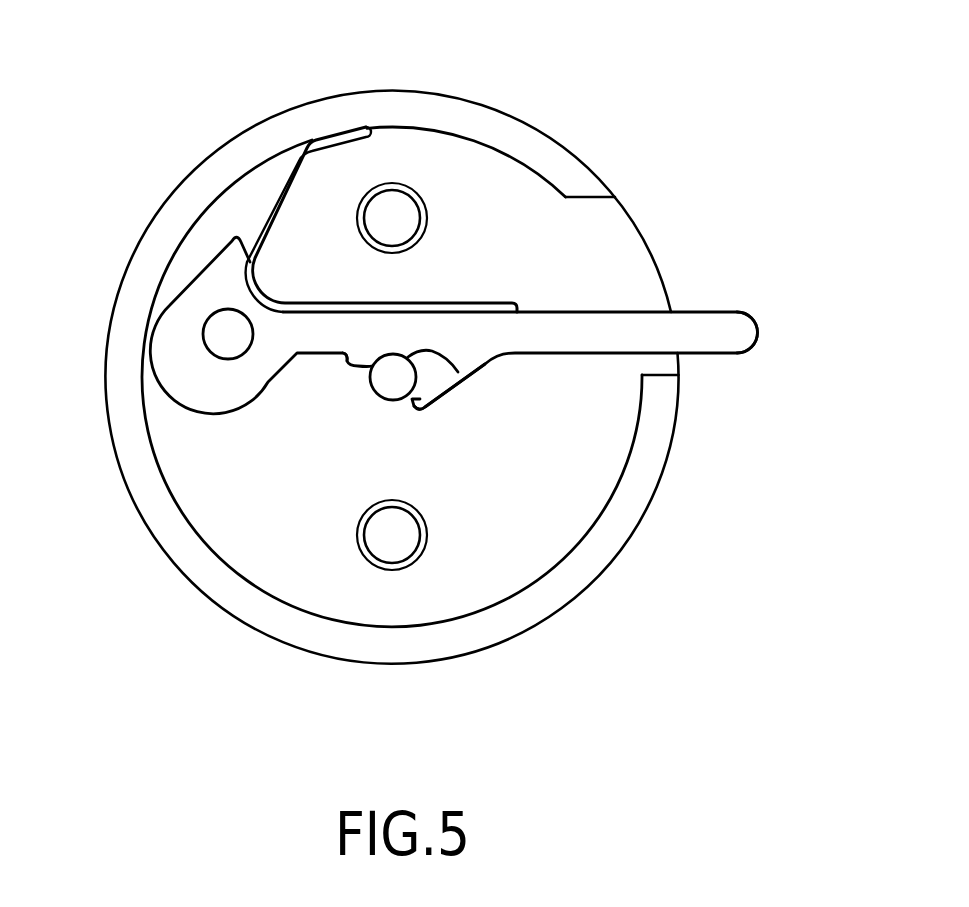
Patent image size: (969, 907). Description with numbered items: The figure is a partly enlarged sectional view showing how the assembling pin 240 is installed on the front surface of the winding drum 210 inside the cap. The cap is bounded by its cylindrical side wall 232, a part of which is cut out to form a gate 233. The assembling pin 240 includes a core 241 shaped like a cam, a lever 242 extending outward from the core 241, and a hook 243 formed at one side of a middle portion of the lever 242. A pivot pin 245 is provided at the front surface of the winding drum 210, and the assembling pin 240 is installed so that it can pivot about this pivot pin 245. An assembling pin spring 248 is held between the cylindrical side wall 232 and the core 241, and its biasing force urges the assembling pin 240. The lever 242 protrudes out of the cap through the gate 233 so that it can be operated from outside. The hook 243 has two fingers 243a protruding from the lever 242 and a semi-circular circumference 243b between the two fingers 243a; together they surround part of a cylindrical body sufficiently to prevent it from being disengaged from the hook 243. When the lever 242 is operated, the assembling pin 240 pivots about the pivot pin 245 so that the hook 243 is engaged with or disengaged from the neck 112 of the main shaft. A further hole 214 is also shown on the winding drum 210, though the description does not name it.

The cylindrical side wall 232 is at (350, 110).
The winding drum 210 is at (238, 550).
The gate 233 is at (636, 272).
The mounting hole 214 is at (402, 545).
The assembling pin spring 248 is at (266, 218).
The core 241 is at (190, 311).
The pivot pin 245 is at (222, 338).
The assembling pin 240 is at (703, 296).
The lever 242 is at (700, 338).
The neck 112 is at (390, 362).
The semi-circular circumference 243b is at (458, 372).
The fingers 243a is at (410, 402).
The hook 243 is at (470, 416).